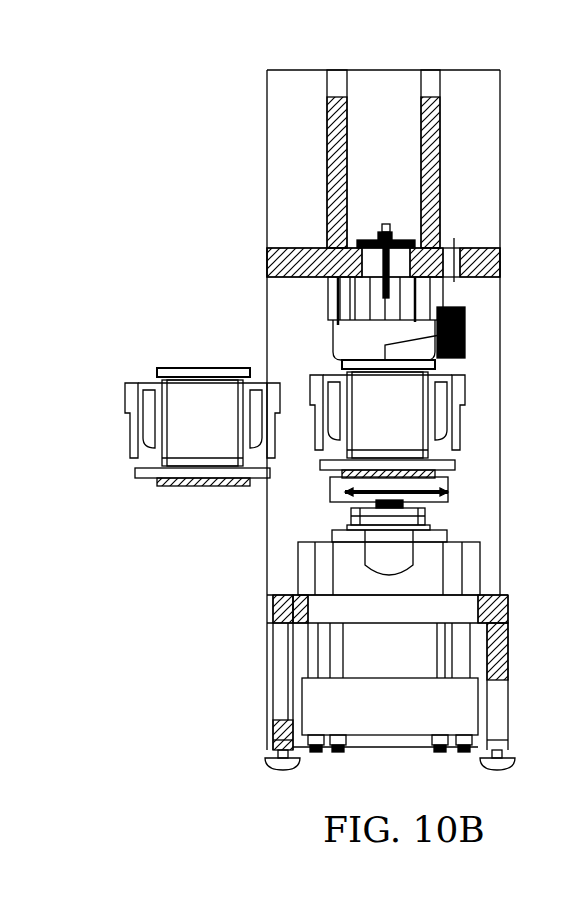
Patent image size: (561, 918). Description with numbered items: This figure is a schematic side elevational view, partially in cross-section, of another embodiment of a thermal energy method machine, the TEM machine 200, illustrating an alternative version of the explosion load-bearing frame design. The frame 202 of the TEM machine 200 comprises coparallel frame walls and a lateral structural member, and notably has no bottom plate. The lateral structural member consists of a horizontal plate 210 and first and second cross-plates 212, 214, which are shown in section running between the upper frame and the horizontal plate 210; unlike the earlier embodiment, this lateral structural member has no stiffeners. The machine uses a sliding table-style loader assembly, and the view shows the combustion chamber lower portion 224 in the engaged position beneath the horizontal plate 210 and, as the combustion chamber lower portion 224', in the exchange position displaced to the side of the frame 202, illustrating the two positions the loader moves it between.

The TEM machine 200 is at (185, 90).
The frame 202 is at (265, 137).
The horizontal plate 210 is at (267, 263).
The first cross-plate 212 is at (338, 80).
The second cross-plate 214 is at (433, 76).
The combustion chamber lower portion 224 is at (432, 419).
The combustion chamber lower portion (exchange position) 224' is at (161, 427).